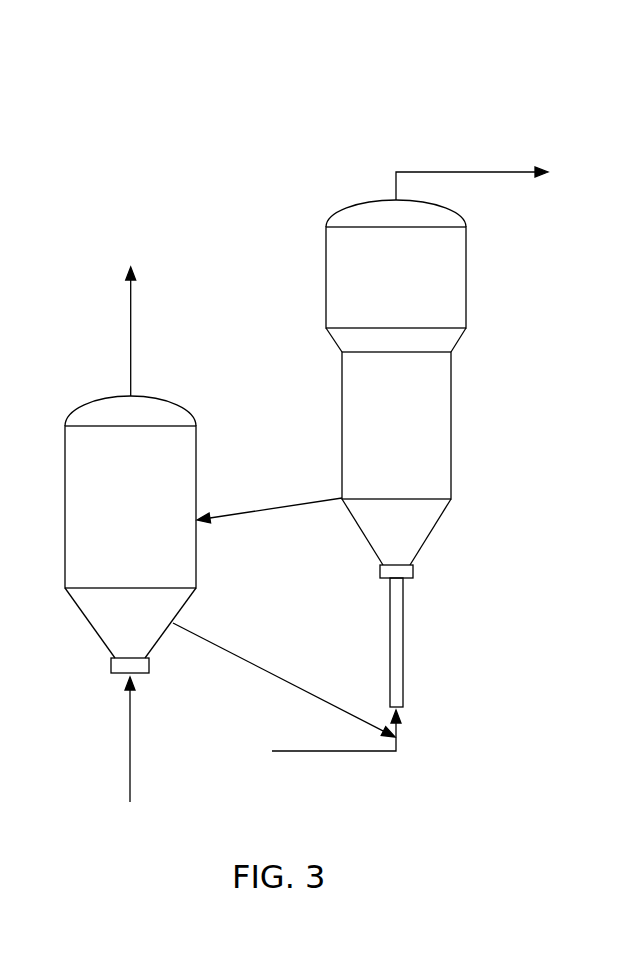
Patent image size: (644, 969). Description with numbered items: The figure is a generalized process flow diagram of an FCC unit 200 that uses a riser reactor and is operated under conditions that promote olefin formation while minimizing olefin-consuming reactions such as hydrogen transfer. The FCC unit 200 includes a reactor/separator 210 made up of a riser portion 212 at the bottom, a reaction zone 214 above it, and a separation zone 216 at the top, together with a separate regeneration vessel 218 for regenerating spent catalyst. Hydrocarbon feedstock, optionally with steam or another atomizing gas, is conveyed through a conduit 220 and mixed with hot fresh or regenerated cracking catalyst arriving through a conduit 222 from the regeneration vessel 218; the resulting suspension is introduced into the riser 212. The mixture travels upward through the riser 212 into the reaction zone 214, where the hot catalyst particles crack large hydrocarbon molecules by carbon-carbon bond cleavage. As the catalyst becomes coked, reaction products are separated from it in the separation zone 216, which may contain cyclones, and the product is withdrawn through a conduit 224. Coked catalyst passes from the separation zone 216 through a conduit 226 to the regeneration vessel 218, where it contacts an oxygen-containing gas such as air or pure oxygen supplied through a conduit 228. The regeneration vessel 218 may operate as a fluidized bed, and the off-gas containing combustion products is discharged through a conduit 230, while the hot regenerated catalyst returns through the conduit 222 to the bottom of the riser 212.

The FCC unit 200 is at (139, 98).
The reactor/separator 210 is at (549, 314).
The riser portion 212 is at (404, 632).
The reaction zone 214 is at (414, 440).
The separation zone 216 is at (416, 292).
The regeneration vessel 218 is at (146, 526).
The conduit 220 is at (325, 752).
The conduit 222 is at (303, 690).
The conduit 224 is at (469, 172).
The conduit 226 is at (295, 503).
The conduit 228 is at (131, 759).
The conduit 230 is at (132, 336).